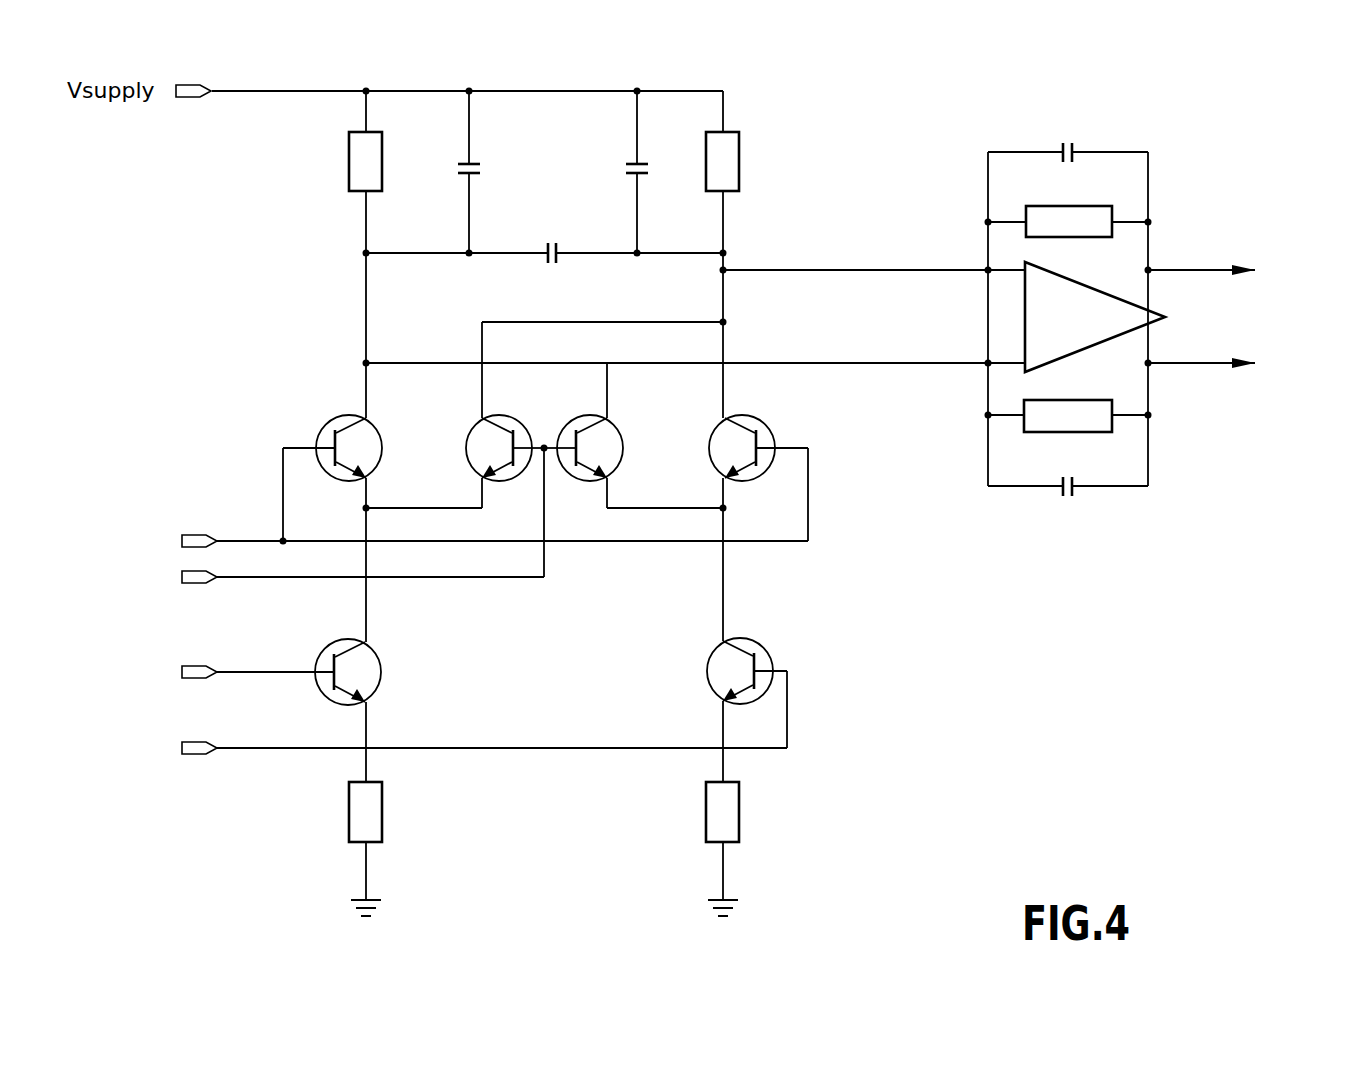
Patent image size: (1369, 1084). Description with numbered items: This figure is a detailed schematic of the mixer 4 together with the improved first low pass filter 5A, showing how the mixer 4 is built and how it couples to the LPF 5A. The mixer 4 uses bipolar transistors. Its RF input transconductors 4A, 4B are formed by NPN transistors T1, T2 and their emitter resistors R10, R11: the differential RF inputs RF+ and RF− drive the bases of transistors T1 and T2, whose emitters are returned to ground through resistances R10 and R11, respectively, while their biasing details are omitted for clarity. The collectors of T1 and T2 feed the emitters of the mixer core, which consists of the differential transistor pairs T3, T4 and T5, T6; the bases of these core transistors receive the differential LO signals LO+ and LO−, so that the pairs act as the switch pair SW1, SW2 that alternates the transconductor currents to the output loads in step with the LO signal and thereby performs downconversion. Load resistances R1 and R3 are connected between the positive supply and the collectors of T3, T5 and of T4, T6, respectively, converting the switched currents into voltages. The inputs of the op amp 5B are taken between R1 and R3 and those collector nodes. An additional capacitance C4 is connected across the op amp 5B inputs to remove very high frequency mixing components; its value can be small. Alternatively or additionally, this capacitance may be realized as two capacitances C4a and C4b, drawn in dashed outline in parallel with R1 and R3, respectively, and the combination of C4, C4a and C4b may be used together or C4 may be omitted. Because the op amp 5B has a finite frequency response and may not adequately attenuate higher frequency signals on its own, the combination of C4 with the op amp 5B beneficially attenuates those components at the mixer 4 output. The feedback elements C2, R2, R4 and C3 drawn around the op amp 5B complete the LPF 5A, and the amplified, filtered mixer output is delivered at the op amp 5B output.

The mixer 4 is at (513, 619).
The transconductor 4A is at (445, 715).
The transconductor 4B is at (643, 715).
The improved first LPF 5A is at (1064, 295).
The op amp 5B is at (1148, 304).
The load resistance R1 is at (343, 172).
The load resistance R3 is at (743, 172).
The capacitance C4a is at (446, 172).
The capacitance C4b is at (615, 172).
The capacitance C4 is at (549, 238).
The transistor T1 is at (342, 630).
The transistor T2 is at (747, 630).
The transistor T3 is at (349, 433).
The transistor T4 is at (455, 415).
The transistor T5 is at (633, 435).
The transistor T6 is at (746, 433).
The switch SW1 is at (298, 480).
The switch SW2 is at (795, 480).
The emitter resistor R10 is at (340, 849).
The emitter resistor R11 is at (749, 849).
The capacitor C2 is at (1068, 137).
The resistor R2 is at (1068, 207).
The resistor R4 is at (1068, 435).
The capacitor C3 is at (1068, 505).